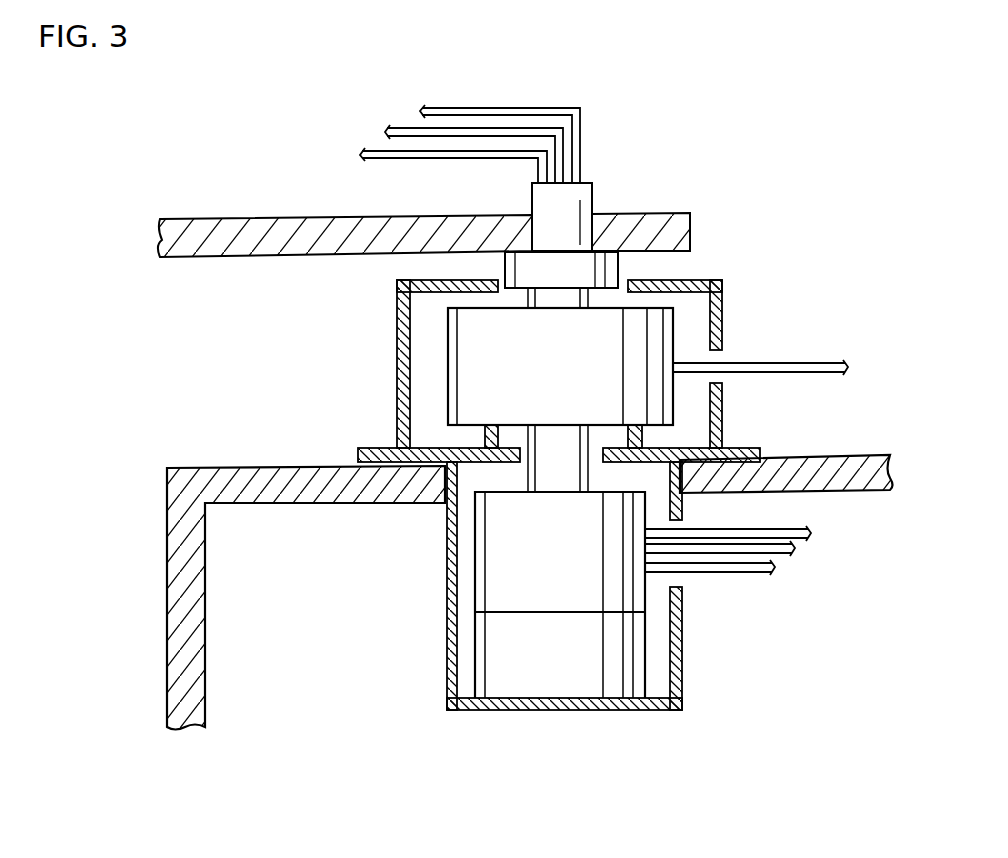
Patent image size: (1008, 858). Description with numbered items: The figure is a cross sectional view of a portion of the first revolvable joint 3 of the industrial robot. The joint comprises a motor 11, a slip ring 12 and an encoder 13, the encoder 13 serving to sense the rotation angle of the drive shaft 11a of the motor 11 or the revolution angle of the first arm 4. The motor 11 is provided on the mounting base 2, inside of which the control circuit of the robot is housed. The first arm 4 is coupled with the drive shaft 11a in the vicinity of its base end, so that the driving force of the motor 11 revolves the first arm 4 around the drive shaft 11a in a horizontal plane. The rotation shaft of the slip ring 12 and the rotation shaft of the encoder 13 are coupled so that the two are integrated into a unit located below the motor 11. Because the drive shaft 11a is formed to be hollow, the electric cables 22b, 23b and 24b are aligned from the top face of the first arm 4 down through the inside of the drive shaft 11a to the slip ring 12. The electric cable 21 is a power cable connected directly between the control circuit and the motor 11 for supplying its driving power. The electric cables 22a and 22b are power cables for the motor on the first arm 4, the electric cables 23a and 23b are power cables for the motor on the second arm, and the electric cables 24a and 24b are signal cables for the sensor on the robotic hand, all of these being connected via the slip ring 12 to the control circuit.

The mounting base 2 is at (265, 463).
The first revolvable joint 3 is at (292, 617).
The first arm 4 is at (235, 212).
The motor 11 is at (480, 403).
The drive shaft 11a is at (608, 276).
The slip ring 12 is at (497, 555).
The encoder 13 is at (495, 660).
The electric cable 21 is at (780, 367).
The electric cable 22a is at (745, 572).
The electric cable 22b is at (466, 107).
The electric cable 23a is at (787, 547).
The electric cable 23b is at (407, 128).
The electric cable 24a is at (800, 537).
The electric cable 24b is at (377, 151).